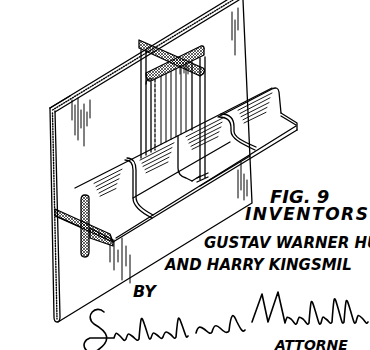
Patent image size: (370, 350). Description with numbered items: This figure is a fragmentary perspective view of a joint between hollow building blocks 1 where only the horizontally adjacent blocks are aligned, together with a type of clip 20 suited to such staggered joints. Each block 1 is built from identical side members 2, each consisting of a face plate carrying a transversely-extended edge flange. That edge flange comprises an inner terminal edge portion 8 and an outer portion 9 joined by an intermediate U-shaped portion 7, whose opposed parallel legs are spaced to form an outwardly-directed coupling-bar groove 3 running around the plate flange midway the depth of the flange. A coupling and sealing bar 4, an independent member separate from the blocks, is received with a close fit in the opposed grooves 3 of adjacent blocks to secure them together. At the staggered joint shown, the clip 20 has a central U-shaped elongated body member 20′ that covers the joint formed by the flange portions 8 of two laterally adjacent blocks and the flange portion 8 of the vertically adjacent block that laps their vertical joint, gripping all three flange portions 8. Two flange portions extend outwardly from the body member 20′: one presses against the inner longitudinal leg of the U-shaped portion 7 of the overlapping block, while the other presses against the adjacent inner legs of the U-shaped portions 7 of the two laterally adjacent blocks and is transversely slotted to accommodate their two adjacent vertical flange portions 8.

The hollow building block 1 is at (46, 152).
The side member 2 is at (75, 95).
The coupling-bar groove 3 is at (79, 236).
The coupling and sealing bar 4 is at (200, 47).
The U-shaped portion 7 is at (158, 68).
The inner terminal edge portion 8 is at (289, 114).
The outer portion 9 is at (157, 50).
The clip 20 is at (126, 160).
The central U-shaped elongated body member 20′ is at (252, 155).